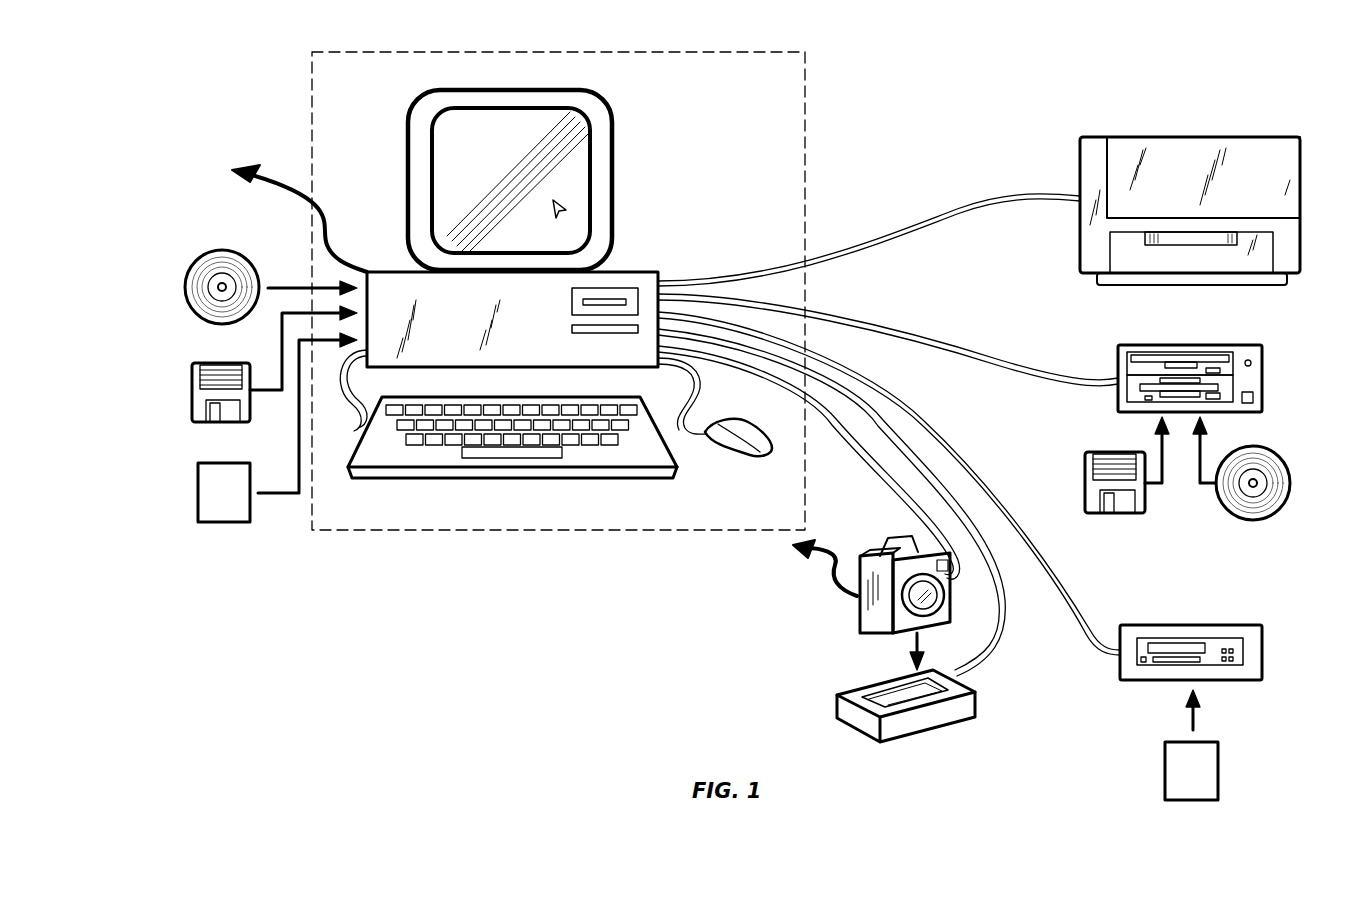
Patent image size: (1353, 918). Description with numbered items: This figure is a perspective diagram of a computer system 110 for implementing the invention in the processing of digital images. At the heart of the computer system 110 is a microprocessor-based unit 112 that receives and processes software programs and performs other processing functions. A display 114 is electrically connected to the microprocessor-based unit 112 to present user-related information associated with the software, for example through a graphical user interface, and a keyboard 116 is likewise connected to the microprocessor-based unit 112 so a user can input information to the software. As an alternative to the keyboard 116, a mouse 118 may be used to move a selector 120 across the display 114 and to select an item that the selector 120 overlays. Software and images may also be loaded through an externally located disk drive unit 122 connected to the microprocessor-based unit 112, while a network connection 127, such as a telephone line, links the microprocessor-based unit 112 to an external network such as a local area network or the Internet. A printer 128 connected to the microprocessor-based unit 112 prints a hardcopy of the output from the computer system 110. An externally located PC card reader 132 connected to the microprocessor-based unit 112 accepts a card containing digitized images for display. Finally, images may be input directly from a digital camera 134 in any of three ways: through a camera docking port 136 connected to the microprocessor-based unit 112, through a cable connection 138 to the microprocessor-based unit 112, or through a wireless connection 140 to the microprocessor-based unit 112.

The computer system 110 is at (312, 100).
The microprocessor-based unit 112 is at (397, 270).
The display 114 is at (423, 97).
The keyboard 116 is at (432, 478).
The mouse 118 is at (722, 445).
The selector 120 is at (572, 206).
The externally located disk drive unit 122 is at (1262, 370).
The network connection 127 is at (278, 195).
The printer 128 is at (1175, 137).
The PC card reader 132 is at (1262, 650).
The digital camera 134 is at (905, 540).
The camera docking port 136 is at (837, 708).
The cable connection 138 is at (880, 455).
The wireless connection 140 is at (822, 593).